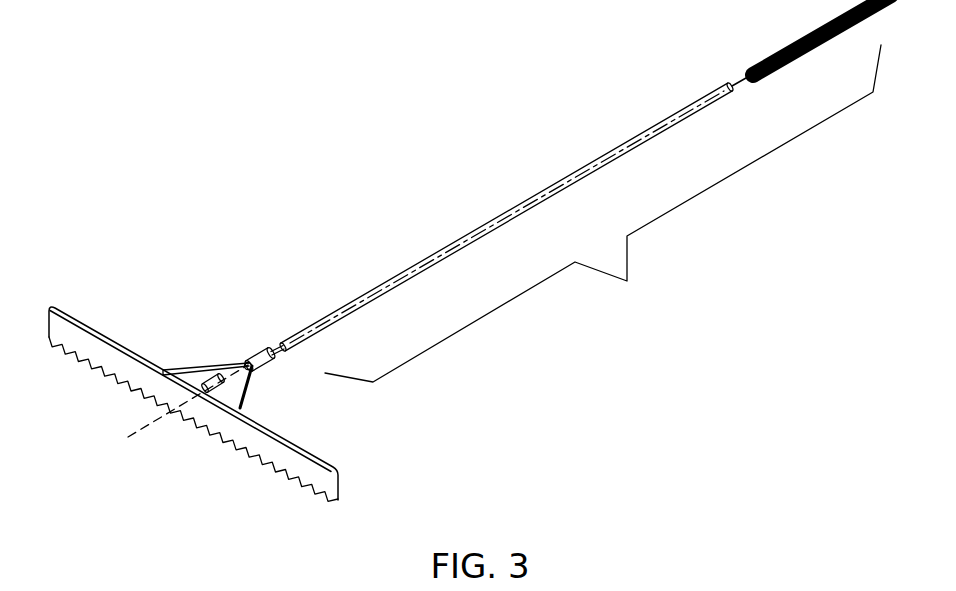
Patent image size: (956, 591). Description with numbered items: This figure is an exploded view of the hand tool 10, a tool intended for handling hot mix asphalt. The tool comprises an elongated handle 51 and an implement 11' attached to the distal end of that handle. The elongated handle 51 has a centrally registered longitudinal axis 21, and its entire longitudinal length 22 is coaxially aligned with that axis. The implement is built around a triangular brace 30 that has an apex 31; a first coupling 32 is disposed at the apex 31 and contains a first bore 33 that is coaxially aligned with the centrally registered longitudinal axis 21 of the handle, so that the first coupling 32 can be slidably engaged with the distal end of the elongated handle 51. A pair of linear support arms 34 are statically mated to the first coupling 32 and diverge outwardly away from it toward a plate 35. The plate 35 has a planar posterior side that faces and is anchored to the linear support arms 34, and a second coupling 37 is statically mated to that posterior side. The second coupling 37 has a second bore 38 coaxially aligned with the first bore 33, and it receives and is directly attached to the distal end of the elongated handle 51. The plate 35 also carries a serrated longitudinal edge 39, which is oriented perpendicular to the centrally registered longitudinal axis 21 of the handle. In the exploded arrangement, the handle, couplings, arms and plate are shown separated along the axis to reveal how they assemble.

The hand tool 10 is at (490, 104).
The elongated handle 51 is at (468, 237).
The triangular brace 30 is at (230, 326).
The linear support arms 34 is at (210, 367).
The apex 31 is at (250, 355).
The first coupling 32 is at (266, 351).
The first bore 33 is at (253, 368).
The second coupling 37 is at (203, 380).
The second bore 38 is at (222, 385).
The serrated longitudinal edge 39 is at (123, 373).
The plate 35 is at (303, 460).
The centrally registered longitudinal axis 21 is at (150, 420).
The longitudinal length 22 is at (603, 213).
The implement 11' is at (377, 408).